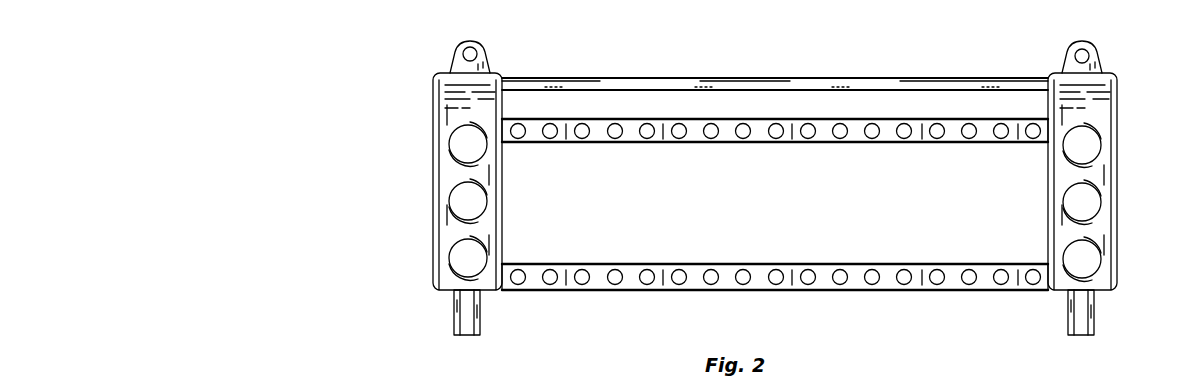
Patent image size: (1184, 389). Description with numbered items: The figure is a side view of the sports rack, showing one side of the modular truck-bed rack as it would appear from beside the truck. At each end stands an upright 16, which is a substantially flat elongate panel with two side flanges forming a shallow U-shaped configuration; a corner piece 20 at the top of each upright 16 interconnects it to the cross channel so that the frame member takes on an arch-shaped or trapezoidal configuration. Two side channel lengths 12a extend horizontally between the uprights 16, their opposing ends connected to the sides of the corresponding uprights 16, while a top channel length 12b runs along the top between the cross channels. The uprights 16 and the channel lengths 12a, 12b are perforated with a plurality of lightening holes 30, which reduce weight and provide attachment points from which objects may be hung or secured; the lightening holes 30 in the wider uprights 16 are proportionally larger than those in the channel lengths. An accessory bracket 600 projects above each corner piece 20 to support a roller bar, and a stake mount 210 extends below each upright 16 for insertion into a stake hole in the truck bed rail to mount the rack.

The side channel length 12a is at (890, 145).
The top channel length 12b is at (813, 86).
The upright 16 is at (435, 181).
The corner piece 20 is at (433, 80).
The lightening hole 30 is at (478, 148).
The stake mount 210 is at (454, 325).
The accessory bracket 600 is at (478, 55).